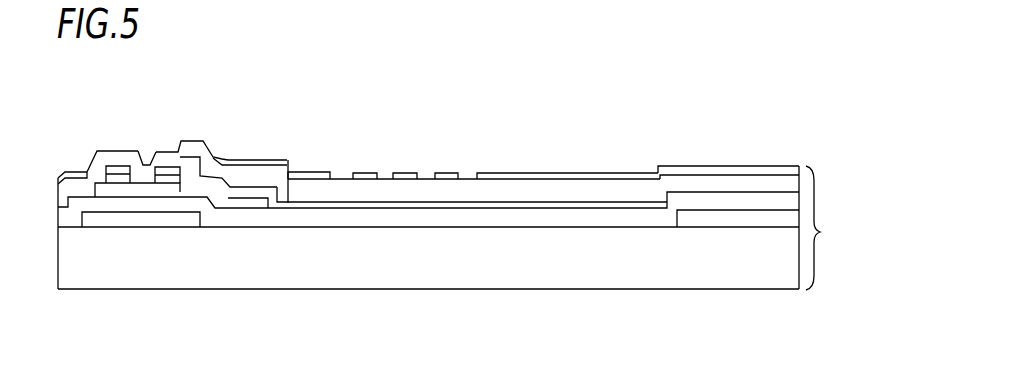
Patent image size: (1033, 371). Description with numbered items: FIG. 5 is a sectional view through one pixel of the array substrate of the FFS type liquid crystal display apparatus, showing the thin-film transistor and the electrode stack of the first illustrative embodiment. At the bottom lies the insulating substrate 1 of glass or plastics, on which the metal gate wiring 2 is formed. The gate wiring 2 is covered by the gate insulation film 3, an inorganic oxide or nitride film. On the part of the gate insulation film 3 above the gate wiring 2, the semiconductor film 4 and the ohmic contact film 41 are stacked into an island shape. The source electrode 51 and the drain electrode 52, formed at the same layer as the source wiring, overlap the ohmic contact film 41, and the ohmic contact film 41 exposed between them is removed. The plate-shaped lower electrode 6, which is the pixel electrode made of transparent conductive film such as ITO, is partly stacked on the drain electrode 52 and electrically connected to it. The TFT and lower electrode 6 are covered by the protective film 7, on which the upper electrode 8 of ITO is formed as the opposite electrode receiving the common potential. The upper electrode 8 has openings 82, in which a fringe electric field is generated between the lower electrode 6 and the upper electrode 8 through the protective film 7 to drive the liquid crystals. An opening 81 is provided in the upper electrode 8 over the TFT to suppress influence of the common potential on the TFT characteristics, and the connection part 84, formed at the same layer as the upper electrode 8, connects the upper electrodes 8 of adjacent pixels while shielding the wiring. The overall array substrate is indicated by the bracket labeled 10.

The insulating substrate 1 is at (375, 255).
The gate wiring 2 is at (172, 218).
The gate insulation film 3 is at (440, 215).
The semiconductor film 4 is at (150, 183).
The ohmic contact film 41 is at (118, 185).
The source electrode 51 is at (130, 170).
The drain electrode 52 is at (158, 170).
The lower electrode 6 is at (291, 178).
The protective film 7 is at (310, 192).
The upper electrode 8 is at (328, 172).
The opening 81 is at (143, 167).
The openings 82 is at (422, 175).
The connection part 84 is at (69, 142).
The thin film transistor substrate 10 is at (830, 228).